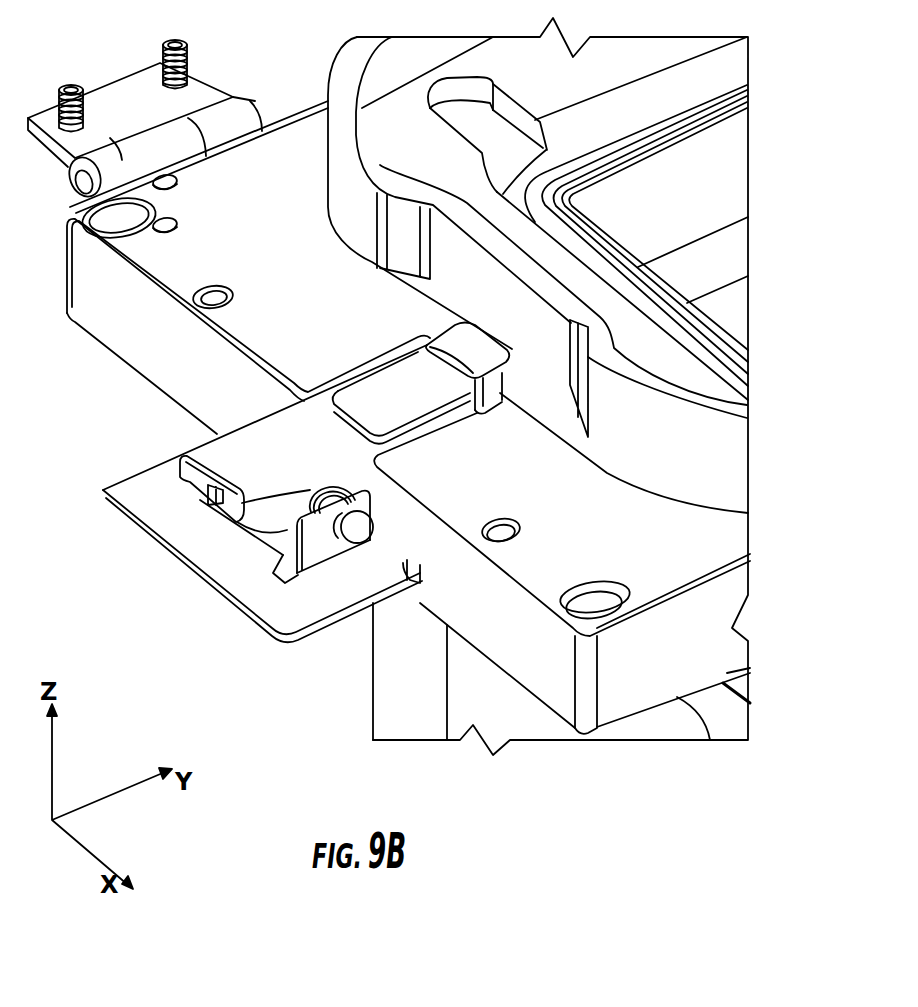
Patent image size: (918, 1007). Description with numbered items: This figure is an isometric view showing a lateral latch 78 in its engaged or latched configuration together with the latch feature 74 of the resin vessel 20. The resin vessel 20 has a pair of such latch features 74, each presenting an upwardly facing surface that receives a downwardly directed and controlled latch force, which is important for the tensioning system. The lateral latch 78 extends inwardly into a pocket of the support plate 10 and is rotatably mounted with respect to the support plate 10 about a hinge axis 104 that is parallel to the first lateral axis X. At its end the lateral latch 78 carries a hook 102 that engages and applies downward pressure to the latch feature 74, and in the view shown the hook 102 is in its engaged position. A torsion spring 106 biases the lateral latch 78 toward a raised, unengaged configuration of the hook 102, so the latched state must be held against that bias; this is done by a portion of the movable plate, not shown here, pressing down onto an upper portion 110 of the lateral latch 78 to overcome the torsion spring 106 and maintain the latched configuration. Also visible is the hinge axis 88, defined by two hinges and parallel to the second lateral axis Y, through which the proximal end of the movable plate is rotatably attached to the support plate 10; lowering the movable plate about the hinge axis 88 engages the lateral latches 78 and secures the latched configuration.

The support plate 10 is at (746, 620).
The resin vessel 20 is at (722, 447).
The latch feature 74 is at (542, 383).
The lateral latch 78 is at (300, 448).
The hinge axis 88 is at (158, 157).
The hook 102 is at (463, 337).
The hinge axis 104 is at (360, 537).
The torsion spring 106 is at (203, 502).
The upper portion 110 is at (373, 393).